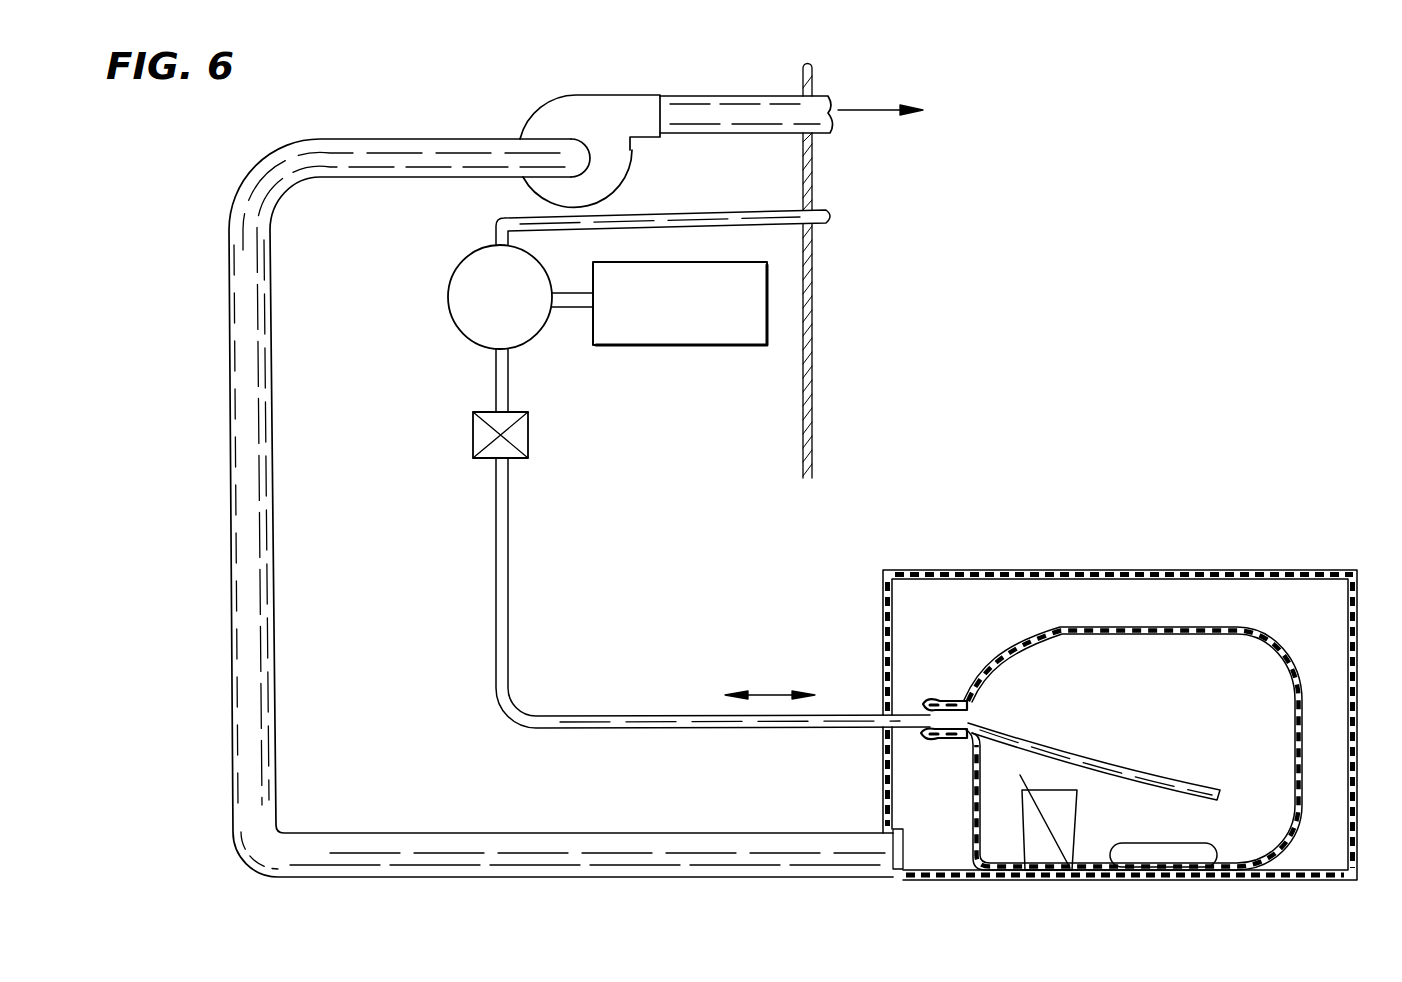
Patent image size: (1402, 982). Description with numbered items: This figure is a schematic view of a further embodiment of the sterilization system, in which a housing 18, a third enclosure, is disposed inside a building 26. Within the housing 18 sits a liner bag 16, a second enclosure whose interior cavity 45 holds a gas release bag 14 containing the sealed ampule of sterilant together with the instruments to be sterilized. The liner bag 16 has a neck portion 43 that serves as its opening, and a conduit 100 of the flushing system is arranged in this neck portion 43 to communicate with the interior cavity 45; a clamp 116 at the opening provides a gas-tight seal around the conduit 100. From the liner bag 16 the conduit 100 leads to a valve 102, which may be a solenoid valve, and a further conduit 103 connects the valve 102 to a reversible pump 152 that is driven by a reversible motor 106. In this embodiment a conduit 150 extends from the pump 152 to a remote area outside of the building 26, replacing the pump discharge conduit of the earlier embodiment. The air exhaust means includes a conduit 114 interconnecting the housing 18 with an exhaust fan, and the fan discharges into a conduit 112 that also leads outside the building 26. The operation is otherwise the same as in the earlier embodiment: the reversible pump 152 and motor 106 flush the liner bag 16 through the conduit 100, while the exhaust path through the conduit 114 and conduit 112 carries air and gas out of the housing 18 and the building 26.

The gas release bag 14 is at (1217, 850).
The liner bag 16 is at (1297, 688).
The housing 18 is at (885, 573).
The building 26 is at (815, 306).
The neck portion 43 is at (920, 738).
The interior cavity 45 is at (1138, 700).
The conduit 100 is at (509, 607).
The valve 102 is at (530, 436).
The conduit 103 is at (509, 381).
The reversible motor 106 is at (672, 346).
The conduit 112 is at (743, 96).
The conduit 114 is at (263, 662).
The clamp 116 is at (948, 700).
The conduit 150 is at (743, 217).
The pump 152 is at (456, 272).